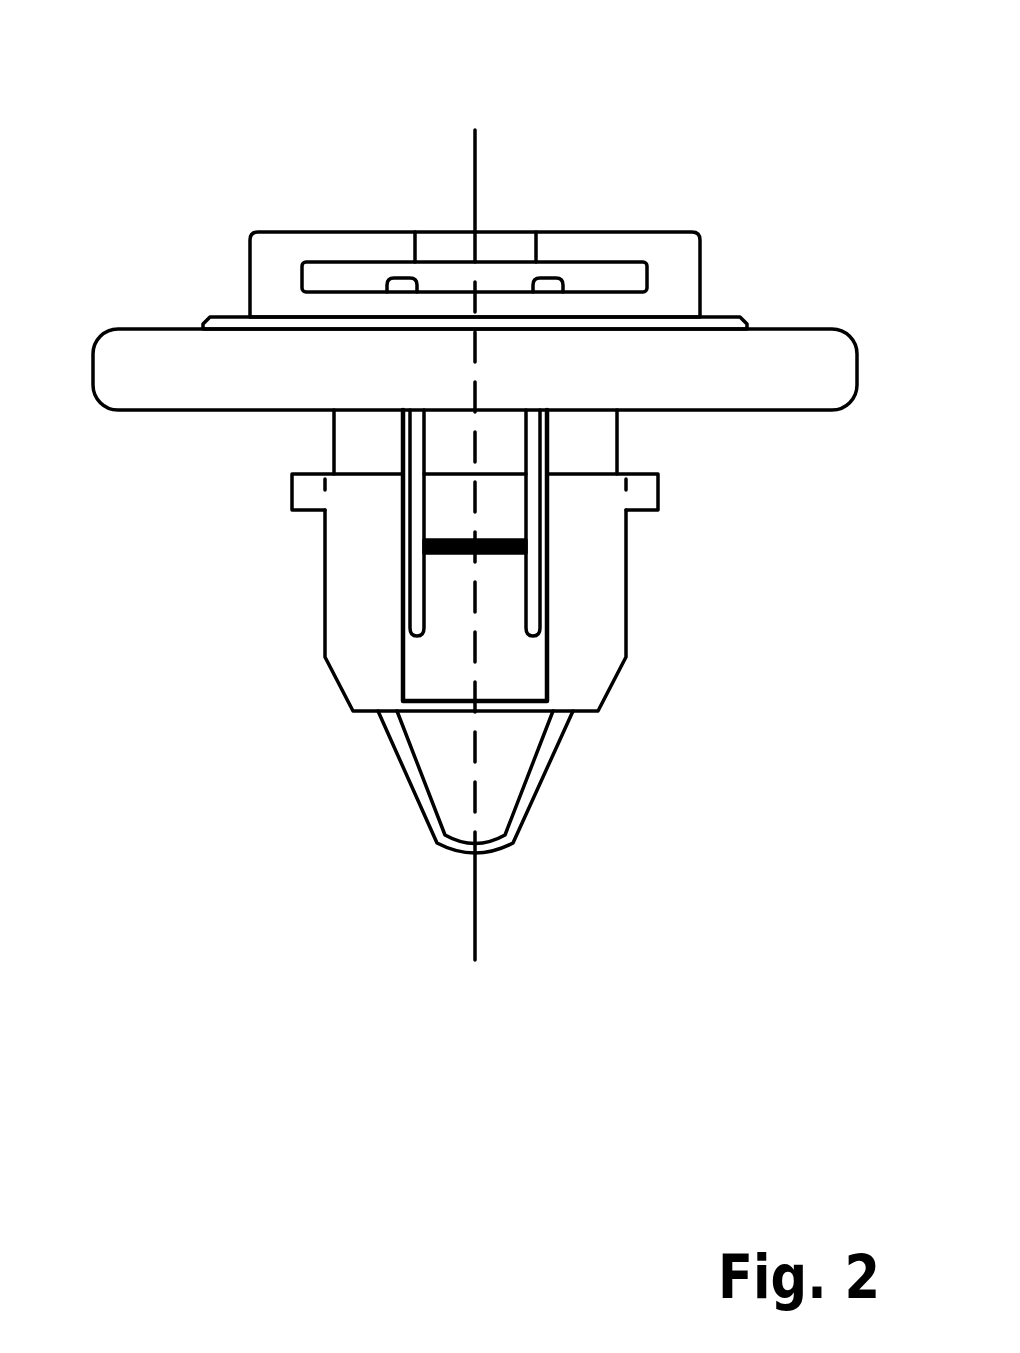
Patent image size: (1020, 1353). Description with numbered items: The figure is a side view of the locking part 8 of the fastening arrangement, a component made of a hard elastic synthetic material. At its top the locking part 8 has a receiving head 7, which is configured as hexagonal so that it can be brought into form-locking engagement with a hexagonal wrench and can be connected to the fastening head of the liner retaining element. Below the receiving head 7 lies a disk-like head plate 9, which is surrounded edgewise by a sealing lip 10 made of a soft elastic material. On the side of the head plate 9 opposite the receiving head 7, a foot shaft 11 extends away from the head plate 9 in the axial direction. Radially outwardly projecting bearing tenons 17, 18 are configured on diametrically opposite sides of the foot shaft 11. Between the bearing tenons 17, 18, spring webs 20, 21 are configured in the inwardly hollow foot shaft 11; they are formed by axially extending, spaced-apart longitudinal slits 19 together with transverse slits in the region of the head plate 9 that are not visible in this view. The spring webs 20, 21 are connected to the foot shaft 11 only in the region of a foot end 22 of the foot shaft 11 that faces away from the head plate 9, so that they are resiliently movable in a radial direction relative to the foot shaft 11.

The receiving head 7 is at (287, 236).
The locking part 8 is at (565, 212).
The head plate 9 is at (735, 315).
The sealing lip 10 is at (117, 368).
The foot shaft 11 is at (592, 658).
The bearing tenon 17 is at (308, 493).
The bearing tenon 18 is at (650, 498).
The longitudinal slits 19 is at (392, 442).
The spring web 20 is at (452, 513).
The spring web 21 is at (630, 442).
The foot end 22 is at (365, 748).